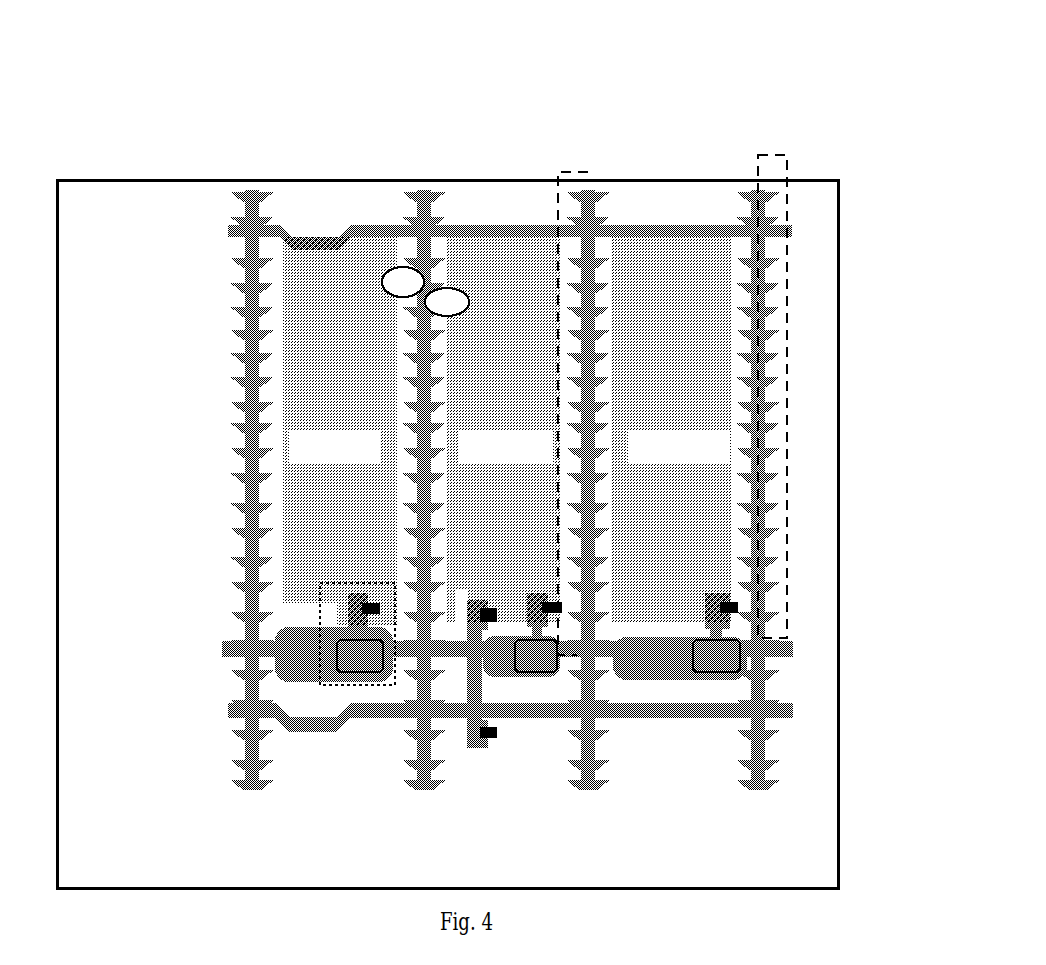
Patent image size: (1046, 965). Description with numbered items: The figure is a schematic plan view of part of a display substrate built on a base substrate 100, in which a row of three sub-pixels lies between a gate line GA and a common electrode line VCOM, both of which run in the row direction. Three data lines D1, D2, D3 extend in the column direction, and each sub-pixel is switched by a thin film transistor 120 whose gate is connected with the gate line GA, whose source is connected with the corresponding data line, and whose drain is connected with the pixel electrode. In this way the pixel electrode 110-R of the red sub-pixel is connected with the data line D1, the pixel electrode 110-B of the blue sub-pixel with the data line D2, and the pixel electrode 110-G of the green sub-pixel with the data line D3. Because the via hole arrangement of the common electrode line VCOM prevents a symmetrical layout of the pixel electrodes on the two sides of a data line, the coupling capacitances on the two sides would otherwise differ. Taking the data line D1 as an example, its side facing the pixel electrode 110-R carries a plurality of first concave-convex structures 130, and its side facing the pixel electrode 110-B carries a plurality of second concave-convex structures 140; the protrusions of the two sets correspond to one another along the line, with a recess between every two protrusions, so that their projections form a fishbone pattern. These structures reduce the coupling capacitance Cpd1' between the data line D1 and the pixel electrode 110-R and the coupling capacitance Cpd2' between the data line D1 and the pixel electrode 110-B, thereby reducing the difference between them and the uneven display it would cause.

The base substrate 100 is at (698, 177).
The pixel electrode of the red sub-pixel 110-R is at (340, 431).
The pixel electrode of the blue sub-pixel 110-B is at (503, 430).
The pixel electrode of the green sub-pixel 110-G is at (672, 430).
The thin film transistor 120 is at (320, 592).
The first concave-convex structures 130 is at (575, 174).
The second concave-convex structures 140 is at (775, 153).
The gate line GA is at (463, 652).
The common electrode line VCOM is at (435, 713).
The data line D1 is at (429, 531).
The data line D2 is at (594, 531).
The data line D3 is at (762, 531).
The coupling capacitance Cpd1' is at (358, 174).
The coupling capacitance Cpd2' is at (504, 189).